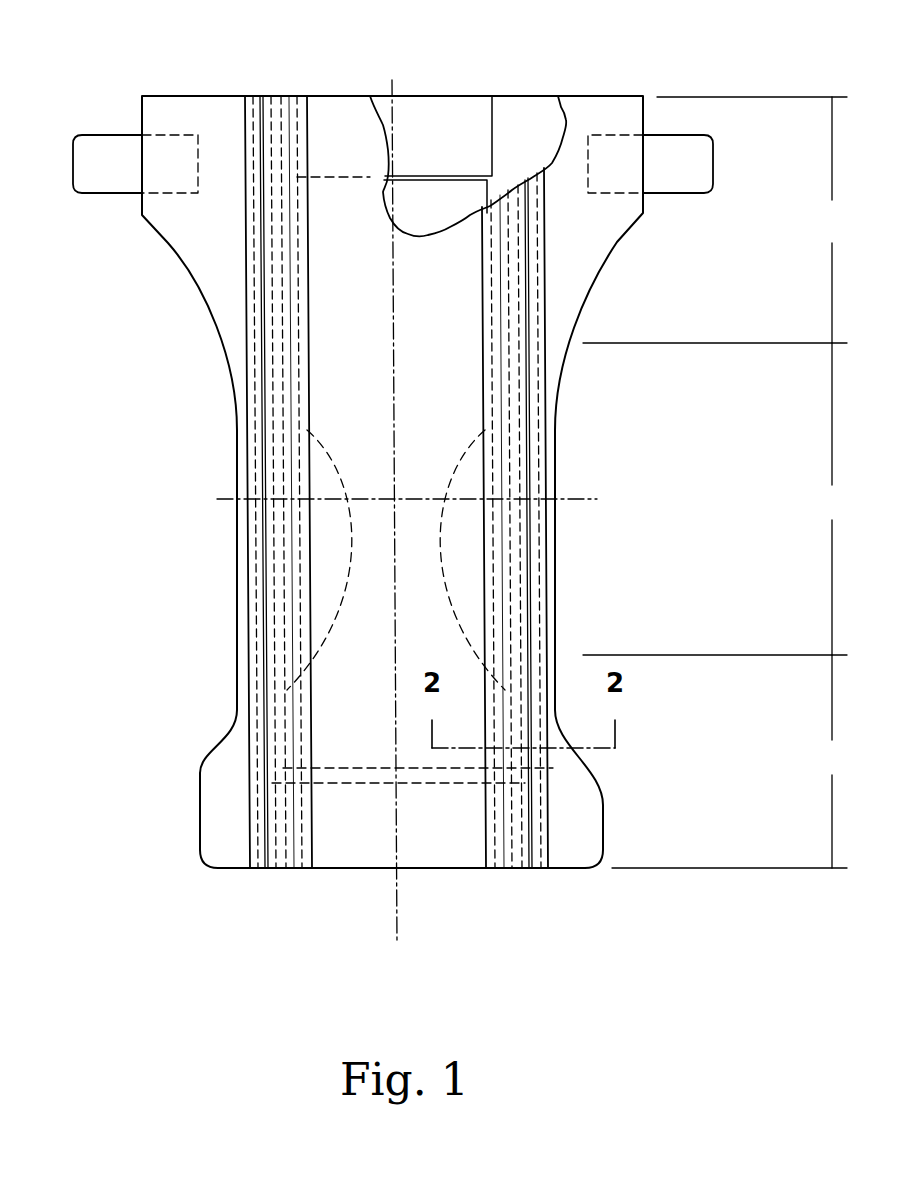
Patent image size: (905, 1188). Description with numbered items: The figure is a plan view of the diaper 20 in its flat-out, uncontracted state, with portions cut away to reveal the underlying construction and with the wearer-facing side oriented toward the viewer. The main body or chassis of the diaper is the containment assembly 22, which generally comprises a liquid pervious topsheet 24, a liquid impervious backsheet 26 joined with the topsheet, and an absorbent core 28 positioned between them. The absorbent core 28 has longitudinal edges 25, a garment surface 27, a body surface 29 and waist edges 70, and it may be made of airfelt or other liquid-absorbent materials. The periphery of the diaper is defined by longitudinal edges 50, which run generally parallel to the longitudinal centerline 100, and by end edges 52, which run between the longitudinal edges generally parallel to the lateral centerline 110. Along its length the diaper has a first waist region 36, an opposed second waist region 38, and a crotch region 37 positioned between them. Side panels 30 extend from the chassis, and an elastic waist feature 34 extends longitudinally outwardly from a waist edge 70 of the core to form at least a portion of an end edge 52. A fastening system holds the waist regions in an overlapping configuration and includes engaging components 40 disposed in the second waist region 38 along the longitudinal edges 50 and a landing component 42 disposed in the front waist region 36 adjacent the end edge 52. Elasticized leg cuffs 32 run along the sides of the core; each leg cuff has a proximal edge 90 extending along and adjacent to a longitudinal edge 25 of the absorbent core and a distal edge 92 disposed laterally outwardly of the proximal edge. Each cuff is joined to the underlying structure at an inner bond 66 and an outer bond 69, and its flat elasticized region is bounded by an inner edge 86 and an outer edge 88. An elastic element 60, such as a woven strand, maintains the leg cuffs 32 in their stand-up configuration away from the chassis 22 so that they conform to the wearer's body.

The diaper 20 is at (140, 468).
The containment assembly 22 is at (330, 708).
The topsheet 24 is at (446, 390).
The longitudinal edges of the absorbent core 25 is at (297, 382).
The backsheet 26 is at (542, 142).
The garment surface of the absorbent core 27 is at (472, 197).
The absorbent core 28 is at (500, 650).
The body surface of the absorbent core 29 is at (441, 219).
The side panels 30 is at (178, 227).
The elasticized leg cuffs 32 is at (258, 618).
The elastic waist feature 34 is at (468, 156).
The first waist region 36 is at (732, 761).
The crotch region 37 is at (718, 499).
The second waist region 38 is at (718, 220).
The engaging component 40 is at (88, 145).
The landing component 42 is at (377, 830).
The longitudinal edges 50 is at (233, 527).
The end edges 52 is at (575, 97).
The elastic element 60 is at (275, 103).
The inner bond 66 is at (318, 100).
The outer bond 69 is at (237, 102).
The waist edges of the absorbent core 70 is at (415, 175).
The inner edge of the elasticized region 86 is at (293, 848).
The outer edge of the elasticized region 88 is at (265, 847).
The proximal edge 90 is at (312, 848).
The distal edge 92 is at (250, 818).
The longitudinal centerline 100 is at (400, 928).
The lateral centerline 110 is at (590, 500).